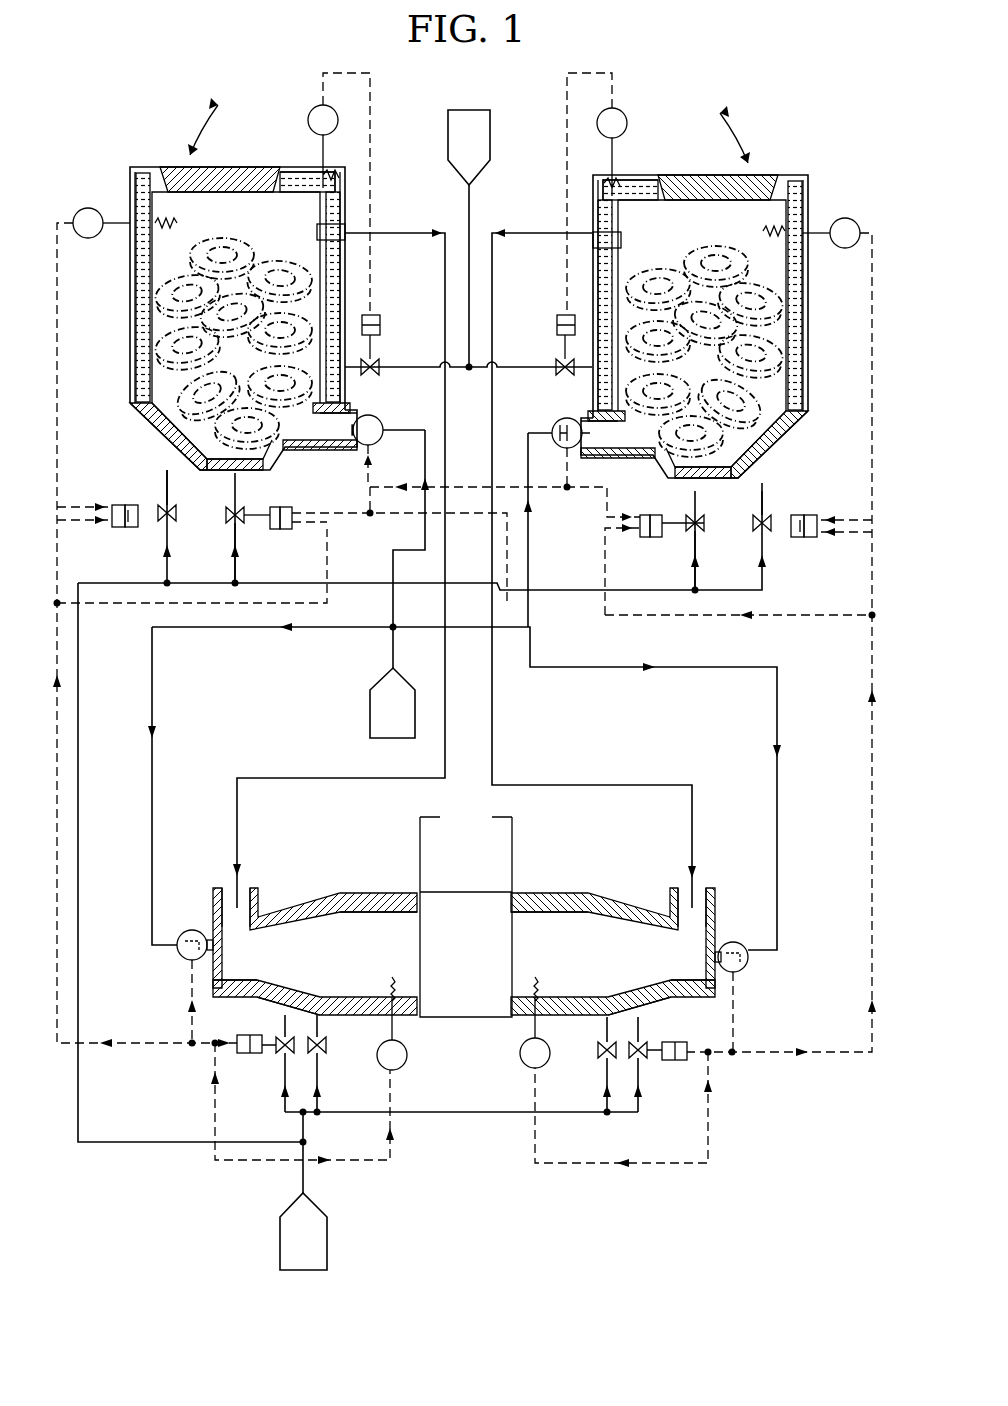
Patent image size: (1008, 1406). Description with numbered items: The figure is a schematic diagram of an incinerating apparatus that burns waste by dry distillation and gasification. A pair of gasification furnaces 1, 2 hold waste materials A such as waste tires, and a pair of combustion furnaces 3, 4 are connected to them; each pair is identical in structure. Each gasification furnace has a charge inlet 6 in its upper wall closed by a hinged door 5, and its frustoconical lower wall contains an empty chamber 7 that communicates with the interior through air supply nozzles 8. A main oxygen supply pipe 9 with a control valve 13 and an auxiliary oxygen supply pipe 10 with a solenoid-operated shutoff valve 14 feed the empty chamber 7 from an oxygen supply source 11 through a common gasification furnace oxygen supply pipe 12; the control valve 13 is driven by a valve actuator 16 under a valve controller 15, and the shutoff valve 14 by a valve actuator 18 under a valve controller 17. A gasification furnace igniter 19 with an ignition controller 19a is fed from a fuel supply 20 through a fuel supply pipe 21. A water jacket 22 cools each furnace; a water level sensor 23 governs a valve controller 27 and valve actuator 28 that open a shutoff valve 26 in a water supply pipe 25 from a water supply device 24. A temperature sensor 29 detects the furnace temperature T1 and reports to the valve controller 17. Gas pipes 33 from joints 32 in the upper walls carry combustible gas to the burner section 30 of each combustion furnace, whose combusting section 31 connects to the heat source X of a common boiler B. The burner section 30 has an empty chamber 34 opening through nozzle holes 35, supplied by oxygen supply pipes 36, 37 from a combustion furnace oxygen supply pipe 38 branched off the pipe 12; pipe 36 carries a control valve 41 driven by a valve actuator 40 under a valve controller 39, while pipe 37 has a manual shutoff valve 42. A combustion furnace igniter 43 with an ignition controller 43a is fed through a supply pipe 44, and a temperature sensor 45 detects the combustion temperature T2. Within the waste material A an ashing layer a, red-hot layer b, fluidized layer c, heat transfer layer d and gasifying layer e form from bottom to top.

The gasification furnace 1 is at (125, 162).
The gasification furnace 2 is at (795, 164).
The combustion furnace 3 is at (330, 886).
The combustion furnace 4 is at (598, 888).
The hinged door 5 is at (174, 165).
The charge inlet 6 is at (275, 169).
The empty chamber 7 is at (142, 422).
The air supply nozzle 8 is at (258, 470).
The main oxygen supply pipe 9 is at (238, 571).
The auxiliary oxygen supply pipe 10 is at (487, 519).
The oxygen supply source 11 is at (327, 1230).
The gasification furnace oxygen supply pipe 12 is at (78, 772).
The control valve 13 is at (244, 524).
The solenoid-operated shutoff valve 14 is at (163, 505).
The valve controller 15 is at (295, 507).
The valve actuator 16 is at (280, 506).
The valve controller 17 is at (116, 527).
The valve actuator 18 is at (128, 527).
The gasification furnace igniter 19 is at (380, 427).
The ignition controller 19a is at (373, 448).
The fuel supply 20 is at (370, 718).
The fuel supply pipe 21 is at (400, 538).
The water jacket 22 is at (142, 279).
The water level sensor 23 is at (312, 108).
The water supply device 24 is at (491, 140).
The water supply pipe 25 is at (426, 362).
The shutoff valve 26 is at (374, 371).
The valve controller 27 is at (374, 315).
The valve actuator 28 is at (380, 338).
The temperature sensor 29 is at (88, 208).
The burner section 30 is at (304, 910).
The combusting section 31 is at (394, 915).
The gas port 32 is at (346, 224).
The gas pipe 33 is at (470, 367).
The empty chamber 34 is at (242, 982).
The nozzle hole 35 is at (298, 996).
The oxygen supply pipe 36 is at (286, 1112).
The oxygen supply pipe 37 is at (320, 1074).
The combustion furnace oxygen supply pipe 38 is at (488, 1112).
The valve controller 39 is at (240, 1041).
The valve actuator 40 is at (258, 1035).
The control valve 41 is at (282, 1060).
The shutoff valve 42 is at (326, 1047).
The combustion furnace igniter 43 is at (188, 930).
The ignition controller 43a is at (186, 966).
The supply pipe 44 is at (245, 627).
The temperature sensor 45 is at (407, 1058).
The waste material A is at (226, 251).
The boiler B is at (513, 826).
The heat source X is at (476, 906).
The temperature sensor T1 is at (470, 216).
The combustion temperature T2 is at (462, 981).
The ashing layer a is at (178, 430).
The red-hot layer b is at (172, 392).
The fluidized layer c is at (165, 352).
The heat transfer layer d is at (165, 318).
The gasifying layer e is at (162, 258).